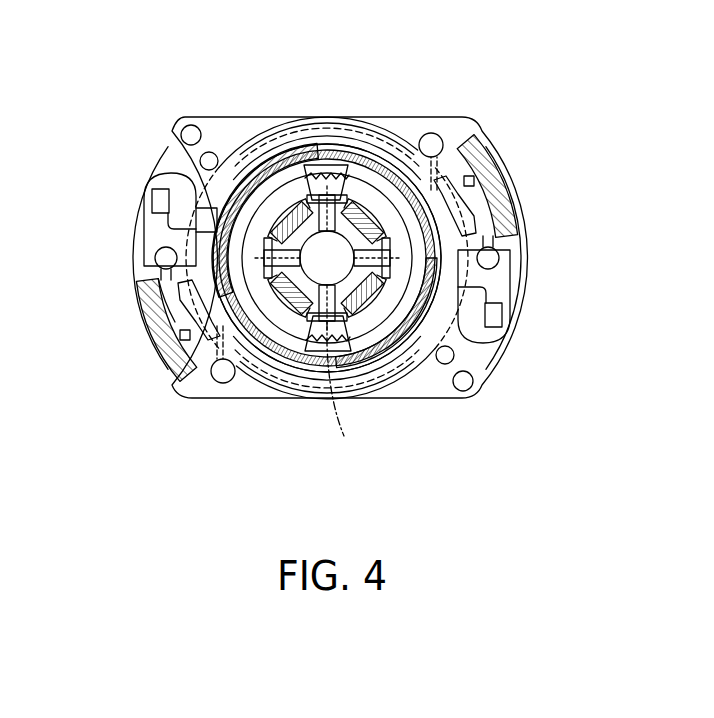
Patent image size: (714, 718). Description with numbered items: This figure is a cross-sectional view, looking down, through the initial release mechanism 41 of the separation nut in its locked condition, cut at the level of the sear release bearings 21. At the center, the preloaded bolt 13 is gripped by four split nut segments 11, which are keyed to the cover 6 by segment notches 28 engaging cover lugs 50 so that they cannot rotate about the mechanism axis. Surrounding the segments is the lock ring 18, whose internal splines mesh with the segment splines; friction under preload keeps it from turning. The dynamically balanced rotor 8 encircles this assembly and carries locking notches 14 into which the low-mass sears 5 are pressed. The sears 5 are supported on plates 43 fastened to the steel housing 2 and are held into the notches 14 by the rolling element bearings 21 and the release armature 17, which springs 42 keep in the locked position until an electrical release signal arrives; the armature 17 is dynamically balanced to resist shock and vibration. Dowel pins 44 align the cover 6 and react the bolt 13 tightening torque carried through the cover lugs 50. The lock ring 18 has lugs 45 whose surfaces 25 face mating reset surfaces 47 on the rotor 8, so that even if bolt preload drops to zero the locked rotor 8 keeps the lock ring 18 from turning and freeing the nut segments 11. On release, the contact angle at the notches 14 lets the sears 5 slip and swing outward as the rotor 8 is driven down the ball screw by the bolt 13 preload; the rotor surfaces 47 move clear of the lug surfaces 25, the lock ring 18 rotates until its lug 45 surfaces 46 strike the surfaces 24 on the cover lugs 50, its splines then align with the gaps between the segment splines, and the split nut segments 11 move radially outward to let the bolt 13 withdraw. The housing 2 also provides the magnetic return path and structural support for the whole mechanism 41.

The housing 2 is at (272, 117).
The sears 5 is at (510, 175).
The cover 6 is at (405, 305).
The dynamically balanced rotor 8 is at (250, 158).
The split nut segments 11 is at (290, 348).
The bolt 13 is at (340, 255).
The locking notches 14 is at (212, 235).
The release armature 17 is at (160, 188).
The lock ring 18 is at (370, 160).
The sear release bearings 21 is at (148, 262).
The surfaces 24 is at (300, 152).
The surfaces 25 is at (343, 391).
The segment notches 28 is at (455, 228).
The initial release mechanism 41 is at (512, 148).
The springs 42 is at (148, 327).
The plates 43 is at (233, 393).
The dowel pins 44 is at (207, 128).
The lugs 45 is at (348, 155).
The surfaces 46 is at (322, 152).
The reset surfaces 47 is at (360, 352).
The cover lugs 50 is at (327, 258).